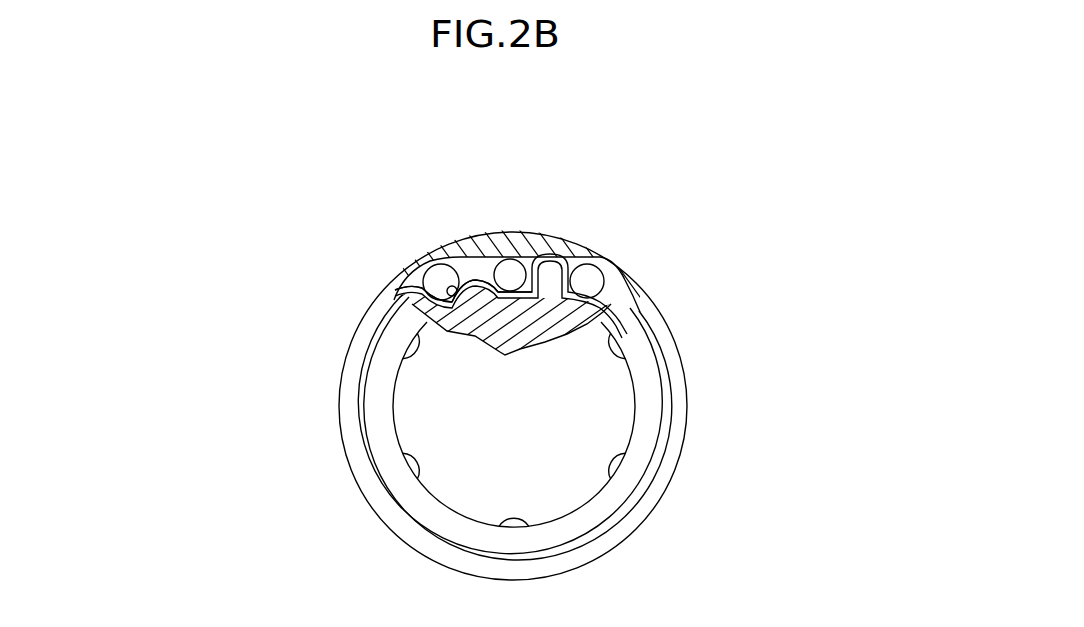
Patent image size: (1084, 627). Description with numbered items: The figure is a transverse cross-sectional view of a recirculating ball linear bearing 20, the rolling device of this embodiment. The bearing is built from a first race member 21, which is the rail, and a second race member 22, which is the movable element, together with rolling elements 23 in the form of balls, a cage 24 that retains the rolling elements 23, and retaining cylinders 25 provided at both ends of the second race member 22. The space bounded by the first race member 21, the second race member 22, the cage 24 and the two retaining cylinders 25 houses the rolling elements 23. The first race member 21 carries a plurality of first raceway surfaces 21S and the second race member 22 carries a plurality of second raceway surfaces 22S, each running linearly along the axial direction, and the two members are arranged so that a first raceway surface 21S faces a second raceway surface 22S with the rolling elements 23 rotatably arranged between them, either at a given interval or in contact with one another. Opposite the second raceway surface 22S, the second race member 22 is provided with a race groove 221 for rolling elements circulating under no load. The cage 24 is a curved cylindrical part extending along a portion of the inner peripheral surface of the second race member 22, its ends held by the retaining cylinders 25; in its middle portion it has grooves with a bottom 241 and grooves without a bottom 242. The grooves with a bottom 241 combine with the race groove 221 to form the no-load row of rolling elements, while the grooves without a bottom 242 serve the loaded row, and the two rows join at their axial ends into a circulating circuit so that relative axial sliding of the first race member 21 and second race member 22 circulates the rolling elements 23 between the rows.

The linear bearing 20 is at (258, 299).
The first race member 21 is at (583, 480).
The first raceway surface 21S is at (518, 288).
The second race member 22 is at (615, 270).
The second raceway surface 22S is at (488, 262).
The race groove 221 is at (459, 260).
The rolling elements 23 is at (428, 266).
The cage 24 is at (566, 255).
The grooves with a bottom 241 is at (485, 298).
The grooves without a bottom 242 is at (522, 292).
The retaining cylinders 25 is at (643, 455).